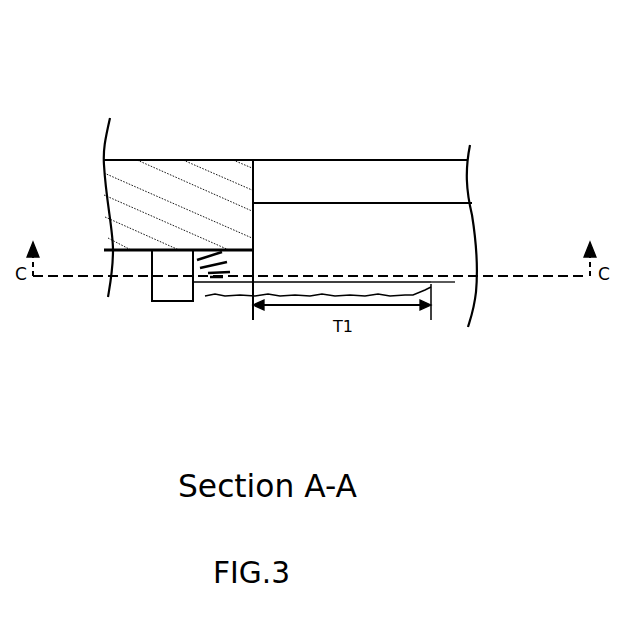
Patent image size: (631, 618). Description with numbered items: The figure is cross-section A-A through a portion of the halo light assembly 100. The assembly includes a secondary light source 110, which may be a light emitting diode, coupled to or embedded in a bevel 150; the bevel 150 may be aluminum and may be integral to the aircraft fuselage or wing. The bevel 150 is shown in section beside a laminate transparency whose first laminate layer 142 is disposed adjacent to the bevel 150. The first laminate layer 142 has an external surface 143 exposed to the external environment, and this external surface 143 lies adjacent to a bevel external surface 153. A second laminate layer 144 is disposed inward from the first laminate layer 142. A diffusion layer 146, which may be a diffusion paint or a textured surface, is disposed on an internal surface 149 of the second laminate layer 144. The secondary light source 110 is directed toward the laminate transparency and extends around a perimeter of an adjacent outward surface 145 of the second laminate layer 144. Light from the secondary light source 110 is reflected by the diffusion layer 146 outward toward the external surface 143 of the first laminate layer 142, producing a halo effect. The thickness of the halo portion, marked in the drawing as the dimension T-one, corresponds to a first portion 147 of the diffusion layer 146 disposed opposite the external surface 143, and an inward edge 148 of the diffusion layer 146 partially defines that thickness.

The halo light assembly 100 is at (134, 49).
The secondary light source 110 is at (157, 308).
The first laminate layer 142 is at (382, 192).
The external surface 143 is at (330, 160).
The second laminate layer 144 is at (382, 251).
The outward surface 145 is at (195, 262).
The diffusion layer 146 is at (228, 288).
The first portion 147 is at (430, 293).
The inward edge 148 is at (430, 284).
The internal surface 149 is at (455, 282).
The bevel 150 is at (173, 198).
The bevel external surface 153 is at (237, 160).